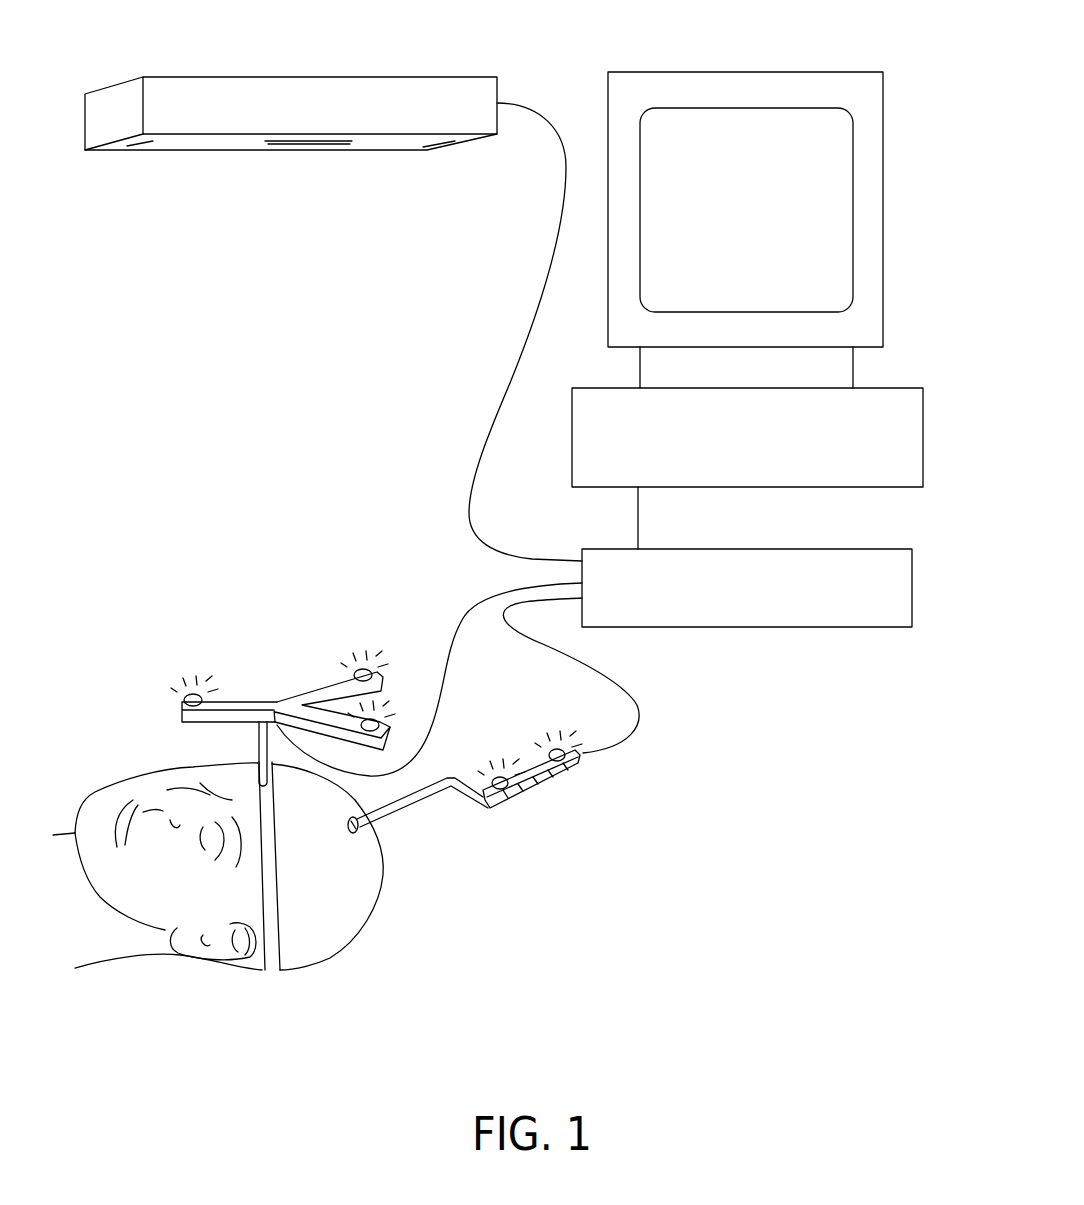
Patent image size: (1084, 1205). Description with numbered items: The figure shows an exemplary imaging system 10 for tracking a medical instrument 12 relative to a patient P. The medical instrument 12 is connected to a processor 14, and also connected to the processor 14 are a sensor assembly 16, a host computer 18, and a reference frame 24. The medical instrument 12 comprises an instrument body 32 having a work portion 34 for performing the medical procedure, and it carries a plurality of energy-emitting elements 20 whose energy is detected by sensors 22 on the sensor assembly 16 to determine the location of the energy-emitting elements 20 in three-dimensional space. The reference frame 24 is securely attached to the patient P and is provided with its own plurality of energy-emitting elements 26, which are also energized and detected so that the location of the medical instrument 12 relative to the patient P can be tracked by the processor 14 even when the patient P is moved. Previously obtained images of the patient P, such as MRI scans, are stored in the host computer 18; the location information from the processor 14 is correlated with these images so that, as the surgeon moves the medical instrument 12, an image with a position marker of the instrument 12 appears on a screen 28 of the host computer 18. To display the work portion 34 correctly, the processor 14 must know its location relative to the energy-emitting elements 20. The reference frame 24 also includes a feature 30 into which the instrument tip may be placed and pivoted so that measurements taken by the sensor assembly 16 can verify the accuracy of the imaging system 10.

The imaging system 10 is at (579, 38).
The medical instrument 12 is at (523, 763).
The processor 14 is at (900, 549).
The sensor assembly 16 is at (350, 77).
The host computer 18 is at (908, 388).
The energy-emitting elements 20 is at (492, 770).
The sensors 22 is at (145, 150).
The reference frame 24 is at (250, 702).
The energy-emitting elements 26 is at (192, 690).
The screen 28 is at (842, 247).
The feature 30 is at (290, 681).
The instrument body 32 is at (507, 803).
The work portion 34 is at (390, 822).
The patient P is at (303, 970).